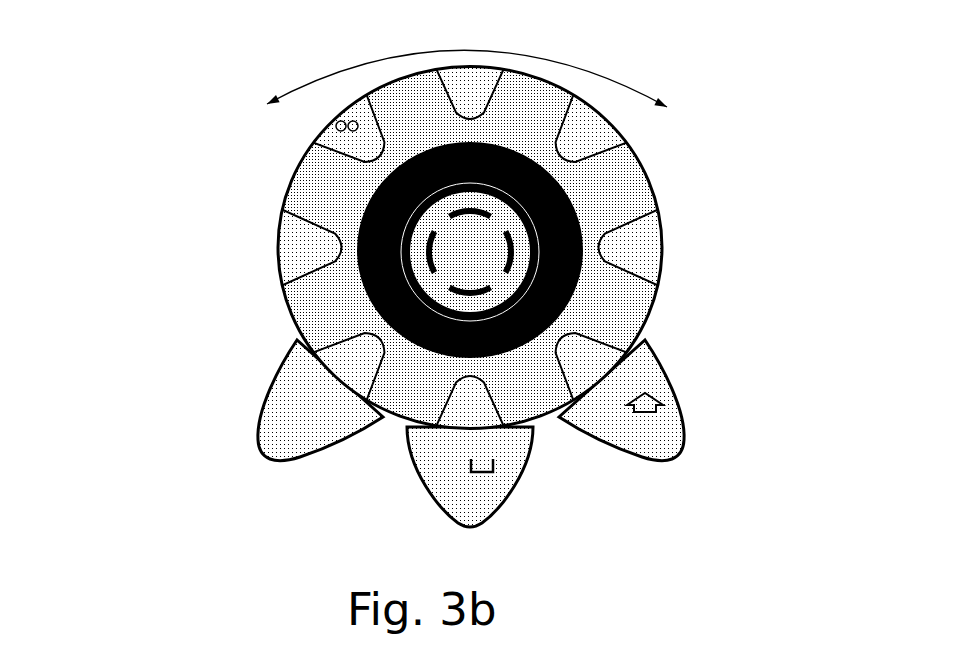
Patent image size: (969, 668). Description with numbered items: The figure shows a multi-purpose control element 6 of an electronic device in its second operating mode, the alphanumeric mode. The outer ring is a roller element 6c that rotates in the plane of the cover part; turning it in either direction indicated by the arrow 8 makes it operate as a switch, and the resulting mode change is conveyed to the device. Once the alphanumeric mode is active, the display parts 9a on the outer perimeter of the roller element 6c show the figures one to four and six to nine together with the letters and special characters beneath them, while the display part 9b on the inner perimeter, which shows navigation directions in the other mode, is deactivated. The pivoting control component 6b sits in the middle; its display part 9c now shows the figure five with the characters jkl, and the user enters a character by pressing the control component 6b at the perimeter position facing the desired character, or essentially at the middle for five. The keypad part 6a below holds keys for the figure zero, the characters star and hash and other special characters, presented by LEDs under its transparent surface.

The control element 6 is at (450, 311).
The keypad part 6a is at (300, 453).
The control component 6b is at (357, 247).
The roller element 6c is at (647, 175).
The arrow 8 is at (467, 70).
The display parts 9a is at (605, 119).
The display part 9b is at (570, 284).
The information display part 9c is at (360, 222).